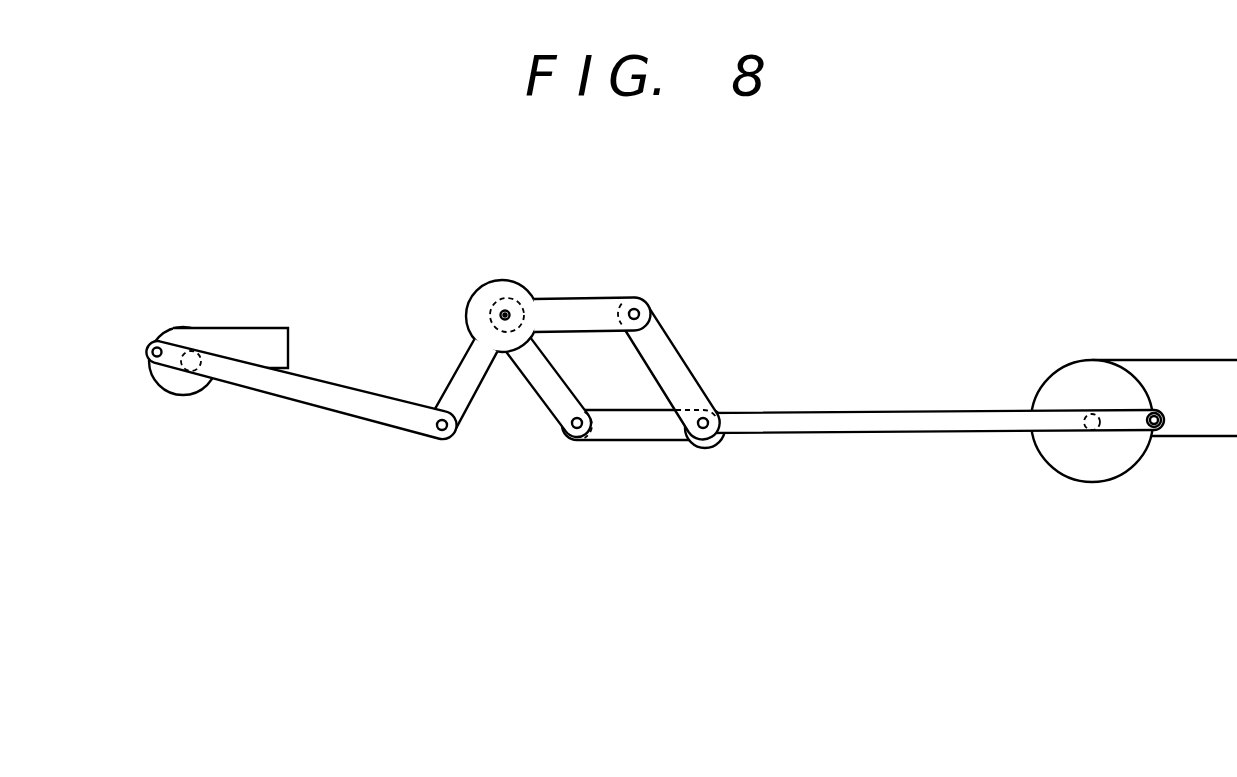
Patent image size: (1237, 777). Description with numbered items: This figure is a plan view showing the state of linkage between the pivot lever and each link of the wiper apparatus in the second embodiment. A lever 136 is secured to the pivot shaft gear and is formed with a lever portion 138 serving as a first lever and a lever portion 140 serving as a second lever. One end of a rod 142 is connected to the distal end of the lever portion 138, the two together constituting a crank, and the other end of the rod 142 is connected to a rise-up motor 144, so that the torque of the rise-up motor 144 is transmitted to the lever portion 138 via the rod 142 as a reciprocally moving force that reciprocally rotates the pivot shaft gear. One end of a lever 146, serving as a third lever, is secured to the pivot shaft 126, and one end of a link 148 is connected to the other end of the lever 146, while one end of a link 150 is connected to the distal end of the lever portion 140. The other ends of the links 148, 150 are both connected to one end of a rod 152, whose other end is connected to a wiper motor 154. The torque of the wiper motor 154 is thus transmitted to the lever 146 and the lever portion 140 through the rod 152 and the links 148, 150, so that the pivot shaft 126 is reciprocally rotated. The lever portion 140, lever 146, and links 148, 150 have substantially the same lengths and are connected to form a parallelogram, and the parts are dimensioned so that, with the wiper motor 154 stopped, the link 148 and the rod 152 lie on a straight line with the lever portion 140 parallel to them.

The pivot shaft 126 is at (505, 310).
The lever 136 is at (460, 320).
The lever portion 138 is at (453, 382).
The lever portion 140 is at (578, 312).
The rod 142 is at (290, 402).
The rise-up motor 144 is at (248, 327).
The lever 146 is at (533, 388).
The link 148 is at (630, 442).
The link 150 is at (665, 348).
The rod 152 is at (865, 413).
The wiper motor 154 is at (1145, 360).